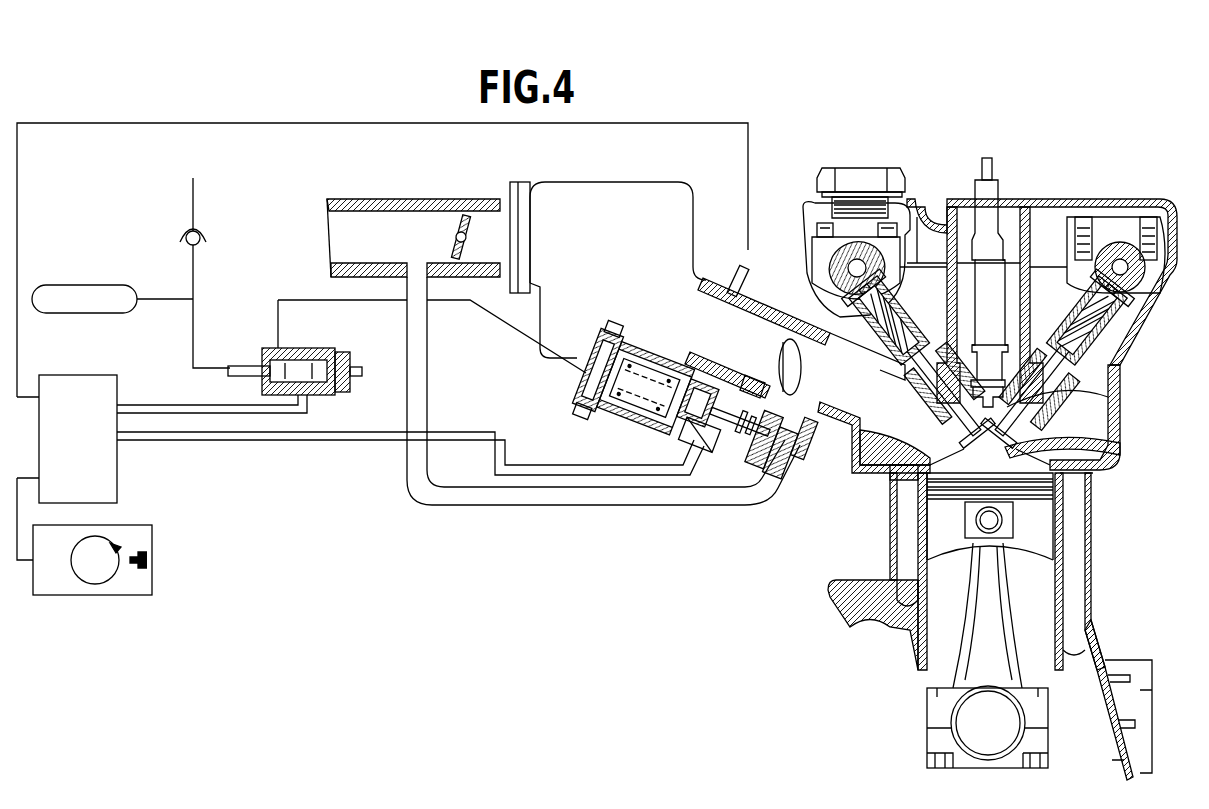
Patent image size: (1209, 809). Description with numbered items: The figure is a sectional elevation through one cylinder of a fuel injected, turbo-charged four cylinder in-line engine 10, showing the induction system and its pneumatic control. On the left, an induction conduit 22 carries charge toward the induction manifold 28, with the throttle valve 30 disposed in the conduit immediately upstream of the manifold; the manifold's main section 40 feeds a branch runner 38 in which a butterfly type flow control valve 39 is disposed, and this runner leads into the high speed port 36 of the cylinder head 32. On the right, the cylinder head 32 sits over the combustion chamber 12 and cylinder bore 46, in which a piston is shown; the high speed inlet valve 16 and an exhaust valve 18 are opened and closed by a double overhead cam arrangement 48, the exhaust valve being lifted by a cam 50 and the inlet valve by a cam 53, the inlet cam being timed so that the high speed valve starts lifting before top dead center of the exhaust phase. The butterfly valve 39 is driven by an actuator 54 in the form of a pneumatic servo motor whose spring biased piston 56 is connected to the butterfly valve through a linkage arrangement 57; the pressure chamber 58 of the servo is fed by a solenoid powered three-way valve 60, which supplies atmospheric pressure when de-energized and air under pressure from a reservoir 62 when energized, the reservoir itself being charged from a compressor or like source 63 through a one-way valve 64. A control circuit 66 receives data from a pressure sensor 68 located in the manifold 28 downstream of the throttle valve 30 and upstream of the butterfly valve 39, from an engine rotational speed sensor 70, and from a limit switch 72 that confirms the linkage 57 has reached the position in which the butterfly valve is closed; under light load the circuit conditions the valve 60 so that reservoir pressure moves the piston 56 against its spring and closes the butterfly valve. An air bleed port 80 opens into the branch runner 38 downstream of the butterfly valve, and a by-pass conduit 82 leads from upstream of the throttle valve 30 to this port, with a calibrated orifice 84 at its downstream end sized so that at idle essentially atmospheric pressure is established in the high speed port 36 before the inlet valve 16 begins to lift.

The engine 10 is at (850, 126).
The combustion chamber 12 is at (993, 453).
The inlet valve 16 is at (932, 410).
The exhaust valve 18 is at (1050, 417).
The induction conduit 22 is at (387, 197).
The induction manifold 28 is at (660, 178).
The throttle valve 30 is at (461, 222).
The cylinder head 32 is at (1118, 335).
The high speed port 36 is at (855, 407).
The branch runner 38 is at (762, 300).
The butterfly type flow control valve 39 is at (800, 362).
The main section of the induction manifold 40 is at (568, 195).
The cylinder bore 46 is at (1050, 580).
The double overhead cam arrangement 48 is at (923, 195).
The cam 50 is at (1120, 255).
The cam 53 is at (827, 265).
The actuator 54 is at (602, 426).
The spring biased piston 56 is at (586, 385).
The linkage arrangement 57 is at (731, 433).
The pressure chamber 58 is at (595, 376).
The solenoid powered three-way valve 60 is at (307, 347).
The reservoir 62 is at (95, 296).
The compressor or like source 63 is at (215, 260).
The one-way valve 64 is at (202, 240).
The control circuit 66 is at (110, 485).
The pressure sensor 68 is at (736, 268).
The engine rotational speed sensor 70 is at (118, 597).
The limit switch 72 is at (700, 453).
The air bleed port 80 is at (800, 407).
The by-pass conduit 82 is at (488, 508).
The calibrated orifice 84 is at (787, 442).